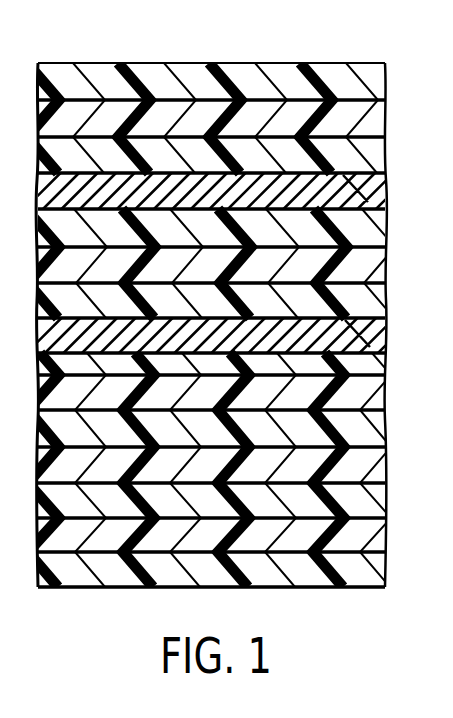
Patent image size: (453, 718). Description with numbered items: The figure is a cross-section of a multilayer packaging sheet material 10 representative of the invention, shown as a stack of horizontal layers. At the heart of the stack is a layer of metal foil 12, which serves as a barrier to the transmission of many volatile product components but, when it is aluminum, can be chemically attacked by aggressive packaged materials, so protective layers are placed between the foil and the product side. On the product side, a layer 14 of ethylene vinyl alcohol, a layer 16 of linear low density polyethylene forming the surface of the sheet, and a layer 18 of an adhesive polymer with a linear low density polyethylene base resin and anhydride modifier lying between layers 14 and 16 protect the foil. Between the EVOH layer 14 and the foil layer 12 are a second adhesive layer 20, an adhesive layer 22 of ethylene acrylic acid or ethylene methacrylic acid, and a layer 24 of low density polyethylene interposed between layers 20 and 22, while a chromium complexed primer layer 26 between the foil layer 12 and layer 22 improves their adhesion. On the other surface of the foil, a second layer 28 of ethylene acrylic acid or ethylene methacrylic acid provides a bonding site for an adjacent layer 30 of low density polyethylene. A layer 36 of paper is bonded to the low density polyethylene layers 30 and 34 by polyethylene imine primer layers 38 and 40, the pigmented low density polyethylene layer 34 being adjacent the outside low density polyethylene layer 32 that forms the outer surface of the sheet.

The sheet material 10 is at (177, 55).
The layer of LDPE 32 is at (387, 86).
The layer of pigmented low density polyethylene 34 is at (387, 121).
The layer of polyethylene imine primer 40 is at (387, 156).
The layer of paper 36 is at (387, 190).
The layer of polyethylene imine primer 38 is at (387, 232).
The layer of LDPE 30 is at (387, 266).
The second layer of EAA or EMAA 28 is at (387, 300).
The layer of metal foil 12 is at (387, 338).
The chromium complexed primer layer 26 is at (387, 367).
The adhesive layer of EAA or EMAA 22 is at (387, 395).
The layer of LDPE 24 is at (387, 430).
The second adhesive layer 20 is at (387, 465).
The layer of EVOH 14 is at (387, 500).
The layer of adhesive polymer 18 is at (387, 537).
The layer of LLDPE 16 is at (387, 570).